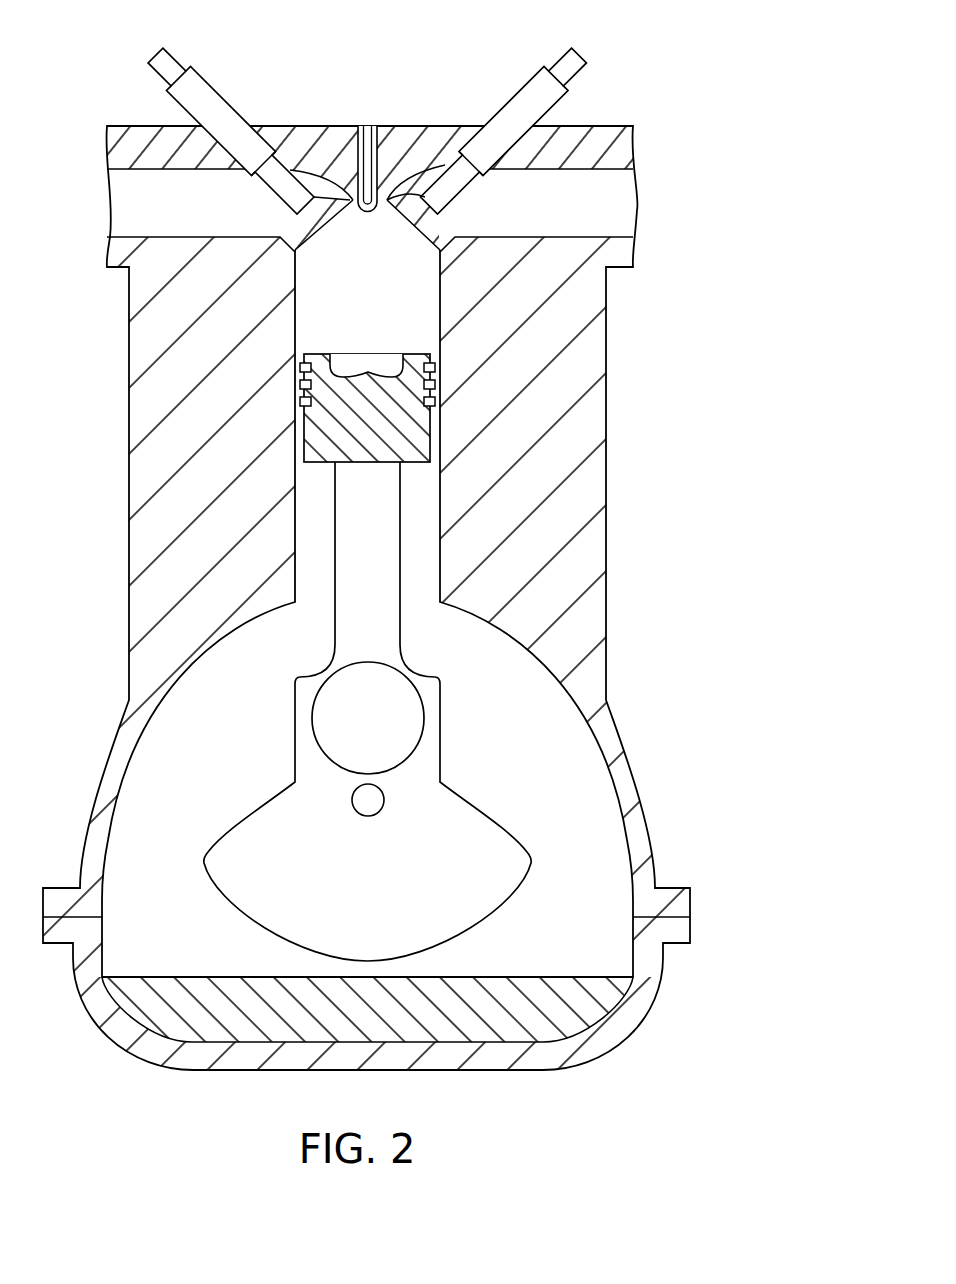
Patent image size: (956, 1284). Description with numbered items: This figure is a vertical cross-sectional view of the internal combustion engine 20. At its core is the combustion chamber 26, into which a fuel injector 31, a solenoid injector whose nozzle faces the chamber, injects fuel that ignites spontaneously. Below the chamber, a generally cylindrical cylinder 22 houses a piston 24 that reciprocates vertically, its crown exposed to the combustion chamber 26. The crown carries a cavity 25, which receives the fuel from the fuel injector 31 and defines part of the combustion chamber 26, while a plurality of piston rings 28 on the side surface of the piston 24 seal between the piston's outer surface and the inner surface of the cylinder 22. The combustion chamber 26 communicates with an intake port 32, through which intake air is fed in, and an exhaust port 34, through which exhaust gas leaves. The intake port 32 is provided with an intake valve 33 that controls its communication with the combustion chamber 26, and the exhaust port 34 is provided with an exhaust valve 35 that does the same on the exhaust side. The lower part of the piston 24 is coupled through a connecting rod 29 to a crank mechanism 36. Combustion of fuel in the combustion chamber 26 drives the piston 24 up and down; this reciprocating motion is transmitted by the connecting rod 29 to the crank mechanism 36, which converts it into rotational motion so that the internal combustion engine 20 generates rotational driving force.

The internal combustion engine 20 is at (386, 537).
The cylinder 22 is at (568, 492).
The piston 24 is at (330, 447).
The cavity 25 is at (373, 364).
The combustion chamber 26 is at (351, 273).
The piston rings 28 is at (308, 356).
The connecting rod 29 is at (385, 613).
The fuel injector 31 is at (380, 140).
The intake port 32 is at (194, 221).
The intake valve 33 is at (288, 178).
The exhaust port 34 is at (524, 221).
The exhaust valve 35 is at (441, 192).
The crank mechanism 36 is at (470, 808).